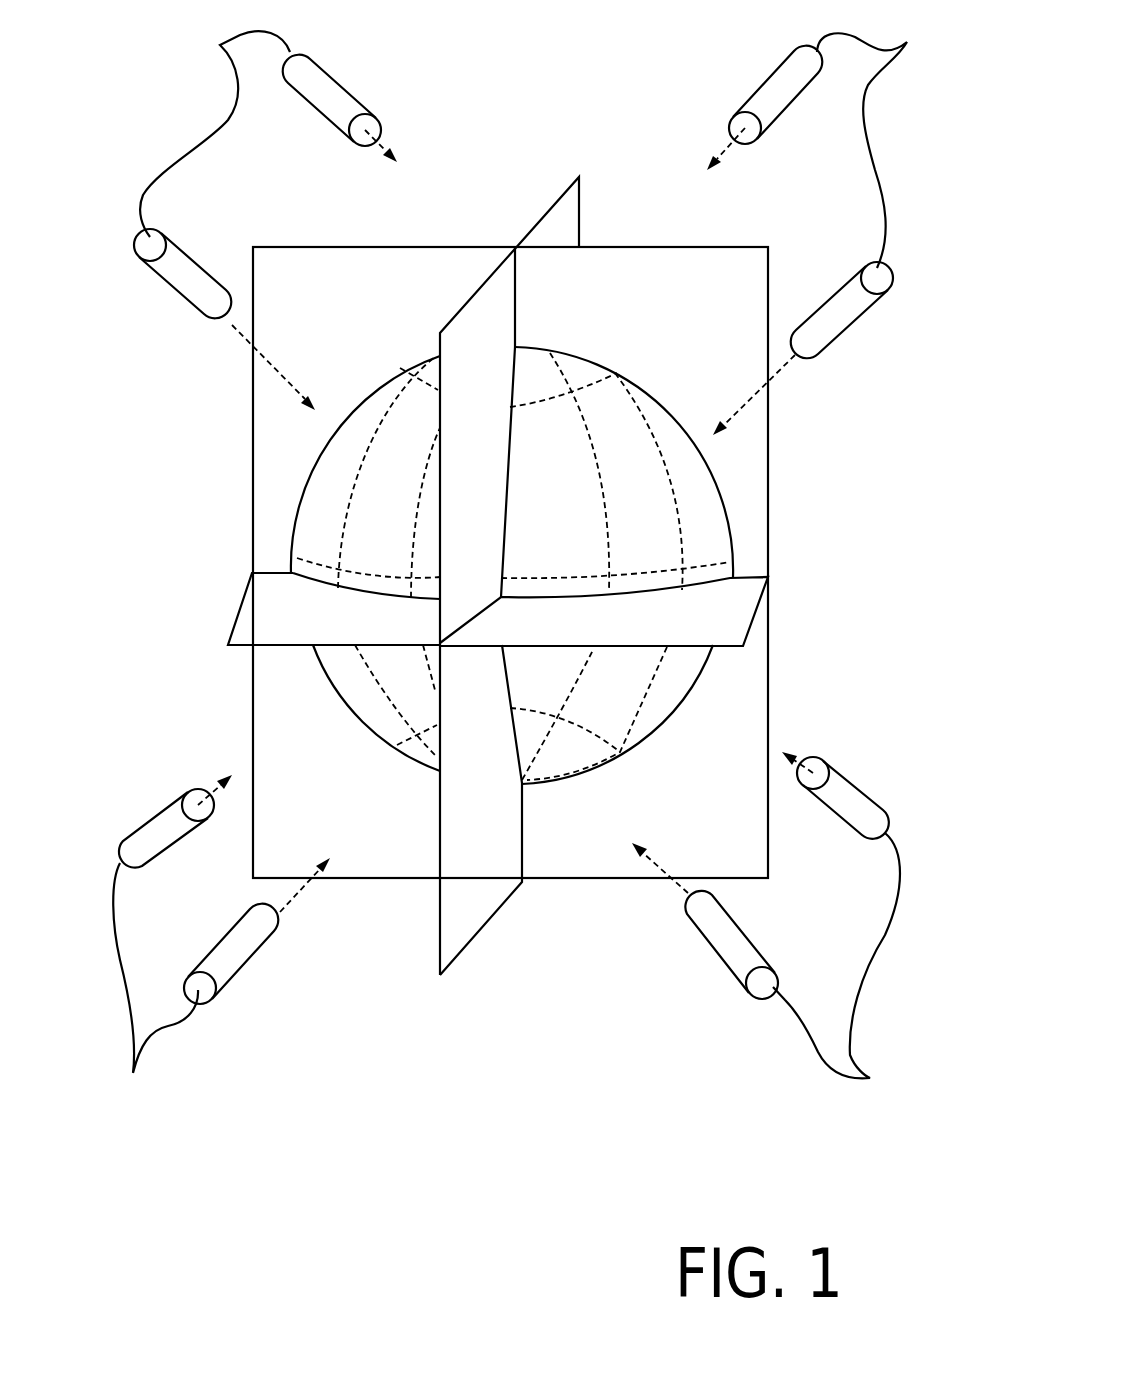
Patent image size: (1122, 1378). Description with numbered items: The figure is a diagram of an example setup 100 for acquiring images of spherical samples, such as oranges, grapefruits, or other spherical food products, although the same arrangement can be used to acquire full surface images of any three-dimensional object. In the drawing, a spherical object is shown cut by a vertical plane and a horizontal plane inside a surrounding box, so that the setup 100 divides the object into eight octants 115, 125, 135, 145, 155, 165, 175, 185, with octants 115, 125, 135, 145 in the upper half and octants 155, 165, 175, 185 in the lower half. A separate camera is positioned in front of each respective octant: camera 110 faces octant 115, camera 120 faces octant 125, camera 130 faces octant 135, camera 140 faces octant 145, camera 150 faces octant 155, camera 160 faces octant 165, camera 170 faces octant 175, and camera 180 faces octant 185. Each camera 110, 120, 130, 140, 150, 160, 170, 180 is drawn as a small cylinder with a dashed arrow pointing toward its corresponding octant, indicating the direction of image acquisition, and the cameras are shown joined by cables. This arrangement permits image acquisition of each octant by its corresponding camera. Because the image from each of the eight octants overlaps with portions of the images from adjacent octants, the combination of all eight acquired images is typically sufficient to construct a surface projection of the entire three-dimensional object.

The setup 100 is at (218, 1222).
The camera 110 is at (328, 70).
The octant 115 is at (438, 223).
The camera 120 is at (760, 85).
The octant 125 is at (652, 224).
The camera 130 is at (178, 248).
The octant 135 is at (397, 457).
The camera 140 is at (852, 278).
The octant 145 is at (601, 434).
The camera 150 is at (176, 807).
The octant 155 is at (245, 717).
The camera 160 is at (855, 827).
The octant 165 is at (786, 699).
The camera 170 is at (222, 938).
The octant 175 is at (415, 716).
The camera 180 is at (693, 933).
The octant 185 is at (586, 695).